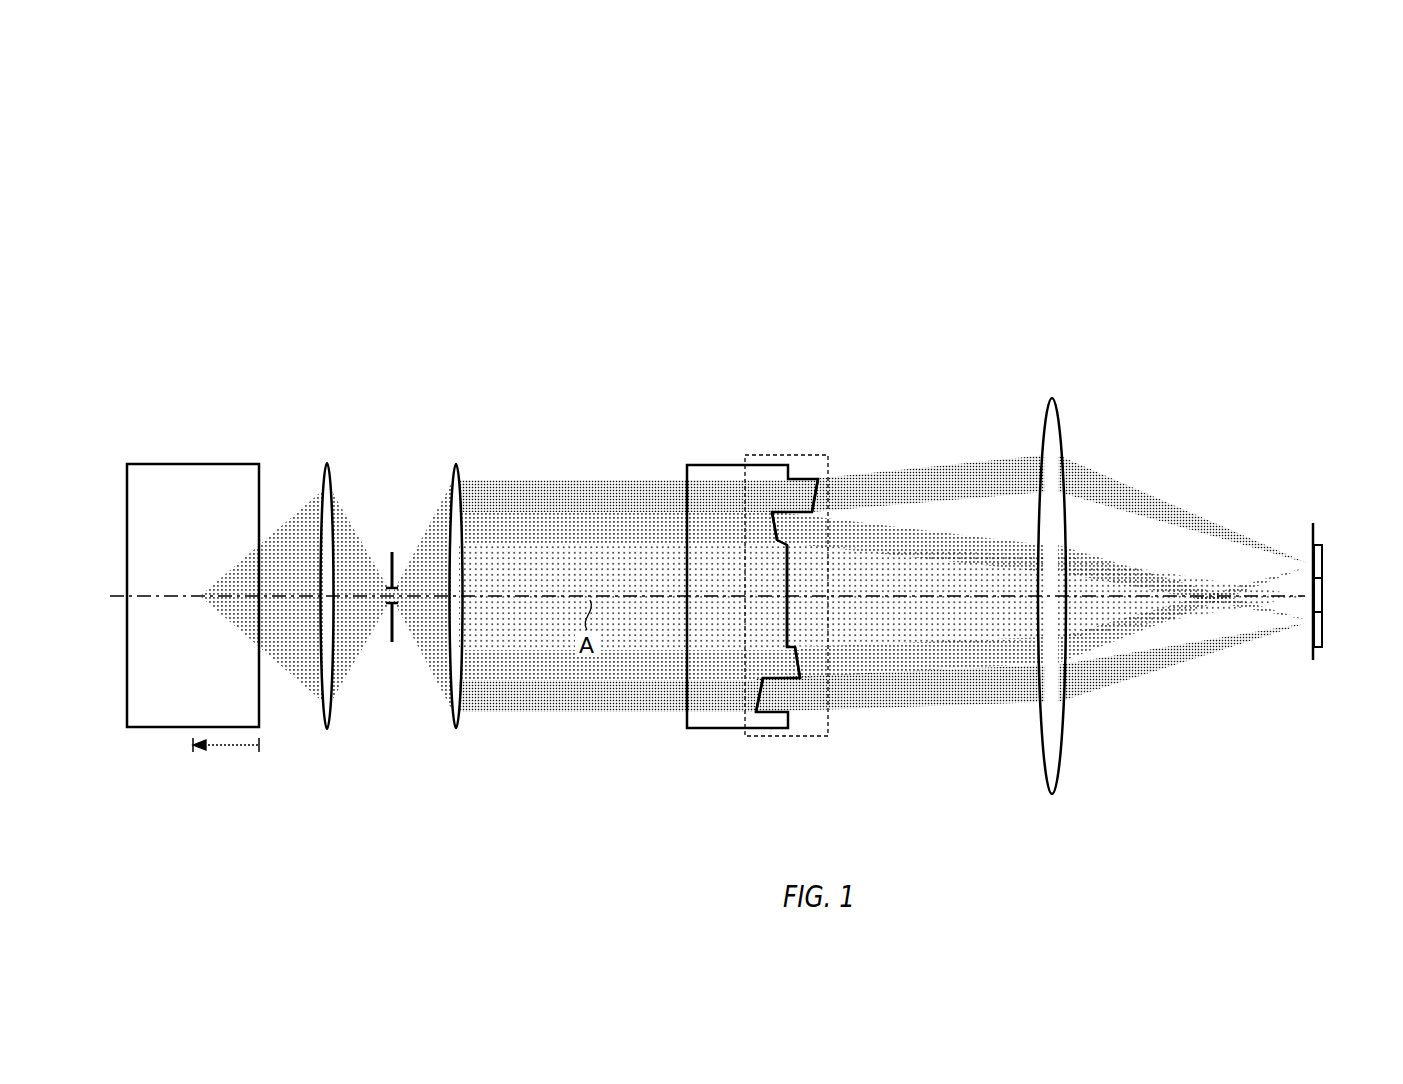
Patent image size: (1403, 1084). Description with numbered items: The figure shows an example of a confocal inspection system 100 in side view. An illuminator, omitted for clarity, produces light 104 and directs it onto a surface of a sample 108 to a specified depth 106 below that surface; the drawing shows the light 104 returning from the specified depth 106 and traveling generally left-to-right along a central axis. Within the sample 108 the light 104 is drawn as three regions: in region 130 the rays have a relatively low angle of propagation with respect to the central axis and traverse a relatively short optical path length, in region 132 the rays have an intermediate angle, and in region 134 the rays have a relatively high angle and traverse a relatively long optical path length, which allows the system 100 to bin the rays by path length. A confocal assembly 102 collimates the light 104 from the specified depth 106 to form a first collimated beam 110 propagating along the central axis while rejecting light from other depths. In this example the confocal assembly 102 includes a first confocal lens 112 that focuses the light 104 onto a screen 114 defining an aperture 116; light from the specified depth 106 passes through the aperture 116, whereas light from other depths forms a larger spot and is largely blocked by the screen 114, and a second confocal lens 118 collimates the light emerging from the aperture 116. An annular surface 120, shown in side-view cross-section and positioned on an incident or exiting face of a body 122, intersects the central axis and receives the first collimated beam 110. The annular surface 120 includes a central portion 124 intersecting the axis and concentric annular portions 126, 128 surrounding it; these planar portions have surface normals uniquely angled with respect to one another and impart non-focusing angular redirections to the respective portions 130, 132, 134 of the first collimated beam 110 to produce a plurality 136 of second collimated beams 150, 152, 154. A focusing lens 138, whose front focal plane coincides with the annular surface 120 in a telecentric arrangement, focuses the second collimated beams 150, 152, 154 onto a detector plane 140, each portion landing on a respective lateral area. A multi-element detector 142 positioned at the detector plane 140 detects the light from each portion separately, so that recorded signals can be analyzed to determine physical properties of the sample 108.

The confocal inspection system 100 is at (240, 280).
The confocal assembly 102 is at (390, 541).
The light 104 is at (284, 668).
The specified depth 106 is at (228, 750).
The sample 108 is at (192, 462).
The first collimated beam 110 is at (638, 695).
The first confocal lens 112 is at (333, 466).
The screen 114 is at (391, 548).
The aperture 116 is at (396, 606).
The second confocal lens 118 is at (450, 728).
The annular surface 120 is at (785, 454).
The body 122 is at (705, 730).
The central portion 124 is at (786, 576).
The concentric annular portion 126 is at (772, 528).
The concentric annular portion 128 is at (812, 494).
The region of low-angle light 130 is at (542, 580).
The region of intermediate-angle light 132 is at (542, 538).
The region of high-angle light 134 is at (542, 505).
The plurality of second collimated beams 136 is at (1002, 688).
The focusing lens 138 is at (1050, 397).
The detector plane 140 is at (1313, 522).
The multi-element detector 142 is at (1320, 650).
The second collimated beam 150 is at (913, 629).
The second collimated beam 152 is at (913, 555).
The second collimated beam 154 is at (913, 497).